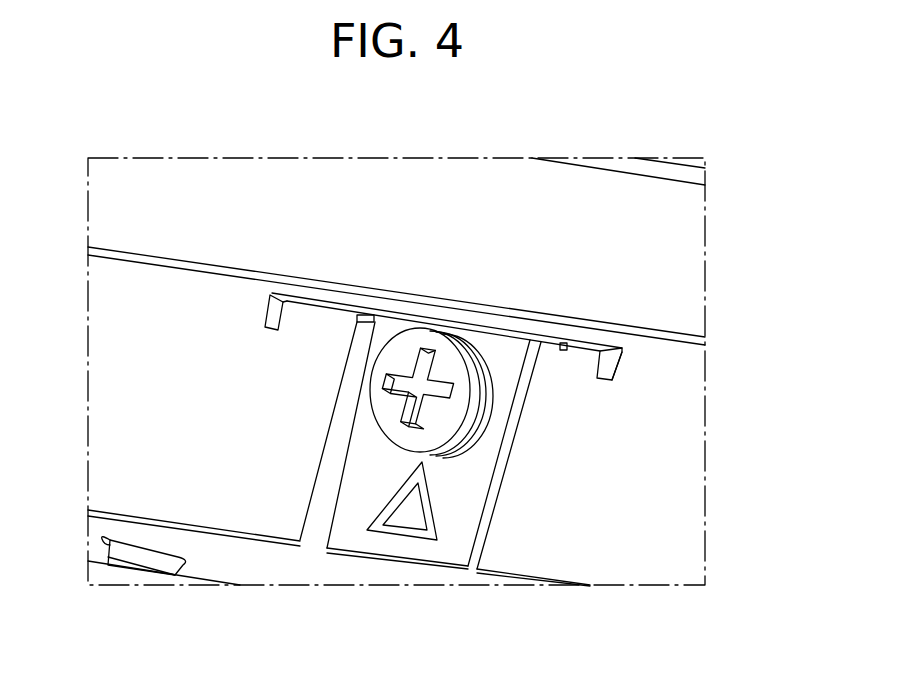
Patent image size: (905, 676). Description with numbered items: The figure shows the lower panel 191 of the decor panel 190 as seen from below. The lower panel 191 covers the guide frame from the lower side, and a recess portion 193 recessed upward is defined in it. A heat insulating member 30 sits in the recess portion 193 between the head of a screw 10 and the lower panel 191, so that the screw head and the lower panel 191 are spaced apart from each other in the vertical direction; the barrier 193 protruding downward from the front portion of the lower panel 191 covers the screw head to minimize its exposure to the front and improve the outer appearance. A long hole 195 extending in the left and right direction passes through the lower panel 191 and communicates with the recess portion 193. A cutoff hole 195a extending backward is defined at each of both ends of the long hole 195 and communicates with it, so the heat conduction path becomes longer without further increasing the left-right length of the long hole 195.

The screw 10 is at (396, 445).
The heat insulating member 30 is at (448, 450).
The decor panel 190 is at (531, 170).
The lower panel 191 is at (500, 558).
The recess portion 193 is at (683, 260).
The long hole 195 is at (467, 328).
The cutoff hole 195a is at (622, 357).